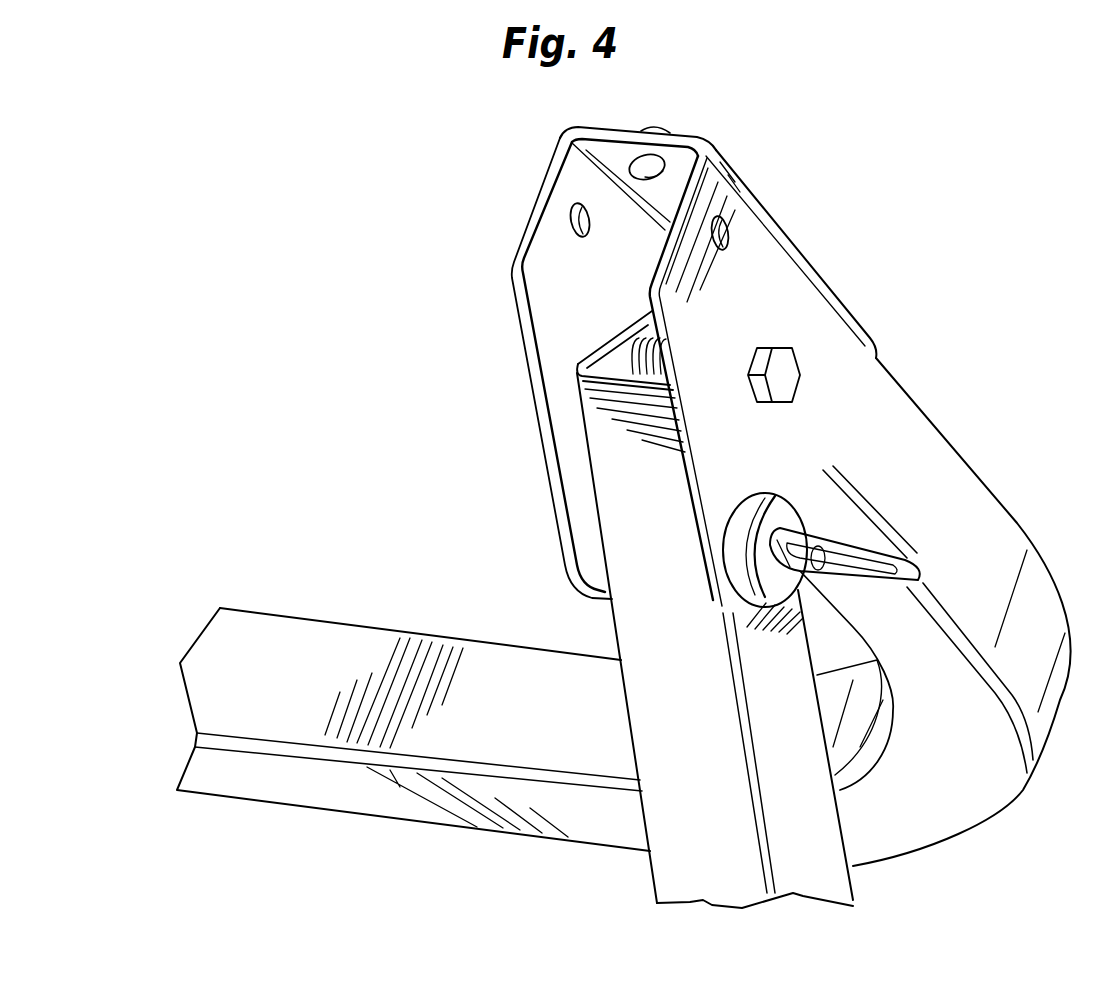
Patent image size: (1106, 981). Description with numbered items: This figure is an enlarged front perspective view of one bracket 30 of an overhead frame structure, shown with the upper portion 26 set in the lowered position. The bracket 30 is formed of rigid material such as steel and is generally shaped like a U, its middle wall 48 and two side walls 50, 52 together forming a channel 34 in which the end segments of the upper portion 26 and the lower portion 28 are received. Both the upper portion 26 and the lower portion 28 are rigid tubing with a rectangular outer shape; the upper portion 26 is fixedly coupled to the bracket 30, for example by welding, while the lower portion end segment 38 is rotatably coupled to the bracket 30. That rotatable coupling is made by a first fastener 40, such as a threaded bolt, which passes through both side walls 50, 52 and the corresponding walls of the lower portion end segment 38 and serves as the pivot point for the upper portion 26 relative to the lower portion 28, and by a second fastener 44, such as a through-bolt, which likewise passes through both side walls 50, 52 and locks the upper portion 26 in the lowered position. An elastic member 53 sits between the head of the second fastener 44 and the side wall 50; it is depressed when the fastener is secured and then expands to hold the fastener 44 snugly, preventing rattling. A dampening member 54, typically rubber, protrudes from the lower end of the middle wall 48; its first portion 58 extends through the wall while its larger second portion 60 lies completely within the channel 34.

The upper portion 26 is at (342, 628).
The lower portion 28 is at (838, 887).
The bracket 30 is at (753, 470).
The channel 34 is at (713, 138).
The lower portion end segment 38 is at (513, 393).
The first fastener 40 is at (788, 377).
The second fastener 44 is at (862, 548).
The middle wall 48 is at (585, 157).
The side wall 50 is at (812, 303).
The side wall 52 is at (533, 278).
The elastic member 53 is at (748, 502).
The dampening member 54 is at (662, 192).
The first portion 58 is at (648, 124).
The second portion 60 is at (645, 168).